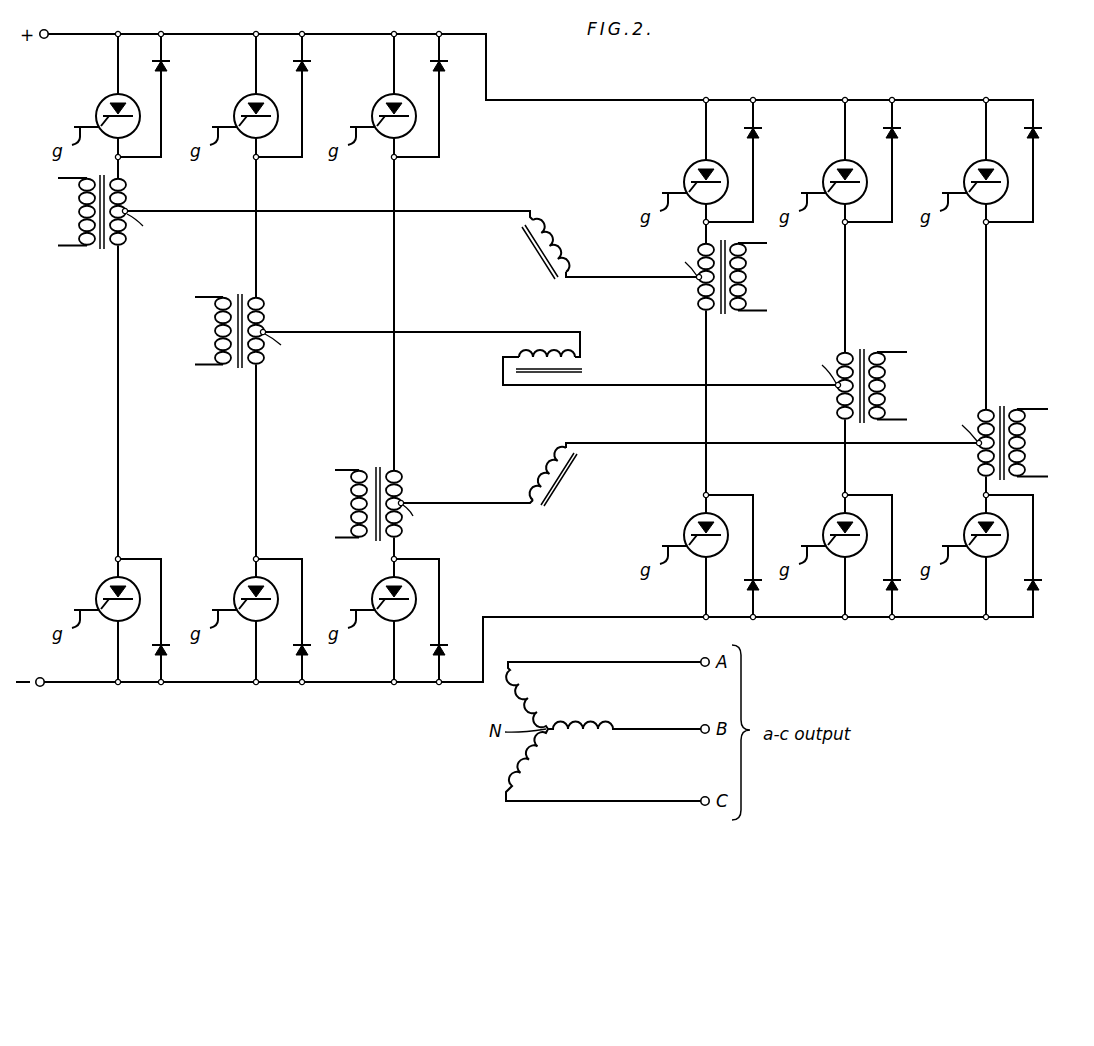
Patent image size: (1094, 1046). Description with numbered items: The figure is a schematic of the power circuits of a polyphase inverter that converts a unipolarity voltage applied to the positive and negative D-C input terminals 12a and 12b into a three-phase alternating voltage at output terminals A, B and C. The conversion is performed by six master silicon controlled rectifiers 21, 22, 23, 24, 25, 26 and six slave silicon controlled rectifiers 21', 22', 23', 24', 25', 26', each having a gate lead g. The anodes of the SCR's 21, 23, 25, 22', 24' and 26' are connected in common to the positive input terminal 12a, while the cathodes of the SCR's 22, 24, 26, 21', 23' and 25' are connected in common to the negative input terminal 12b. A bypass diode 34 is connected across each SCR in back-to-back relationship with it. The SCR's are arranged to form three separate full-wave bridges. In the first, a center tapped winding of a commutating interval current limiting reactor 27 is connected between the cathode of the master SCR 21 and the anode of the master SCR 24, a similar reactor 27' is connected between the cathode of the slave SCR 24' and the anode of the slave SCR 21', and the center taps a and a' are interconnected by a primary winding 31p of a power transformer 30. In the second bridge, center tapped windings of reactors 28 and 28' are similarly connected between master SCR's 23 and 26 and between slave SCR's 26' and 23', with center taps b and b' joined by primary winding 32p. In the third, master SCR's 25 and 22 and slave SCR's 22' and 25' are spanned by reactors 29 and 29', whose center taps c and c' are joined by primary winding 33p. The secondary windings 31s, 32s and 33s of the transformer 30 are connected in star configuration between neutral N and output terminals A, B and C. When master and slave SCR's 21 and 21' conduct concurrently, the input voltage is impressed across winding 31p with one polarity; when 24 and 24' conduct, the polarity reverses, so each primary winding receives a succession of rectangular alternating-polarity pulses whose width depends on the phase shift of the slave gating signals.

The positive D-C input terminal 12a is at (47, 29).
The negative D-C input terminal 12b is at (42, 687).
The master silicon controlled rectifier 21 is at (96, 127).
The master silicon controlled rectifier 22 is at (372, 608).
The master silicon controlled rectifier 23 is at (234, 127).
The master silicon controlled rectifier 24 is at (96, 608).
The master silicon controlled rectifier 25 is at (372, 127).
The master silicon controlled rectifier 26 is at (234, 608).
The slave silicon controlled rectifier 21' is at (684, 545).
The slave silicon controlled rectifier 22' is at (964, 193).
The slave silicon controlled rectifier 23' is at (823, 545).
The slave silicon controlled rectifier 24' is at (684, 193).
The slave silicon controlled rectifier 25' is at (964, 545).
The slave silicon controlled rectifier 26' is at (823, 193).
The commutating interval current limiting reactor 27 is at (106, 223).
The commutating interval current limiting reactor 28 is at (244, 344).
The commutating interval current limiting reactor 29 is at (380, 491).
The commutating interval current limiting reactor 27' is at (717, 291).
The commutating interval current limiting reactor 28' is at (857, 372).
The commutating interval current limiting reactor 29' is at (997, 432).
The power transformer 30 is at (559, 564).
The primary winding 31p is at (556, 233).
The primary winding 32p is at (577, 352).
The primary winding 33p is at (541, 478).
The secondary winding 31s is at (531, 680).
The secondary winding 32s is at (599, 724).
The secondary winding 33s is at (531, 758).
The bypass diode 34 is at (165, 64).